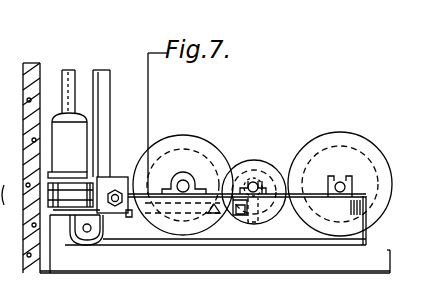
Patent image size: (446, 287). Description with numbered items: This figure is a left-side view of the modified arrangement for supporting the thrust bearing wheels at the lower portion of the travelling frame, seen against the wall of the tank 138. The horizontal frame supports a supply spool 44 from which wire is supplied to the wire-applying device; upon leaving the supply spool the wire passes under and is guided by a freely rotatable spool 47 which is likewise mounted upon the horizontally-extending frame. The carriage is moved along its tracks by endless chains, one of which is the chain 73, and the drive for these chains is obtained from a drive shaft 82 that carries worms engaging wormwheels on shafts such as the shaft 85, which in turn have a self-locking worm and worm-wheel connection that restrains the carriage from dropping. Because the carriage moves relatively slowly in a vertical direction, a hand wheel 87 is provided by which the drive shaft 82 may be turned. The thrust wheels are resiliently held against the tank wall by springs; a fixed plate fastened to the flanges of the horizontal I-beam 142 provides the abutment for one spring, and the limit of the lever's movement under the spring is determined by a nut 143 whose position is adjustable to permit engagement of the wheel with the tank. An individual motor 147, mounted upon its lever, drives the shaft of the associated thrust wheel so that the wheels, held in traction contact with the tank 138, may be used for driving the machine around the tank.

The tank 138 is at (33, 63).
The endless chain 73 is at (99, 88).
The motor 147 is at (78, 120).
The freely rotatable spool 47 is at (200, 120).
The drive shaft 82 is at (253, 182).
The hand wheel 87 is at (270, 167).
The supply spool 44 is at (376, 120).
The nut 143 is at (119, 206).
The shaft 85 is at (142, 206).
The horizontal I-beam 142 is at (278, 234).